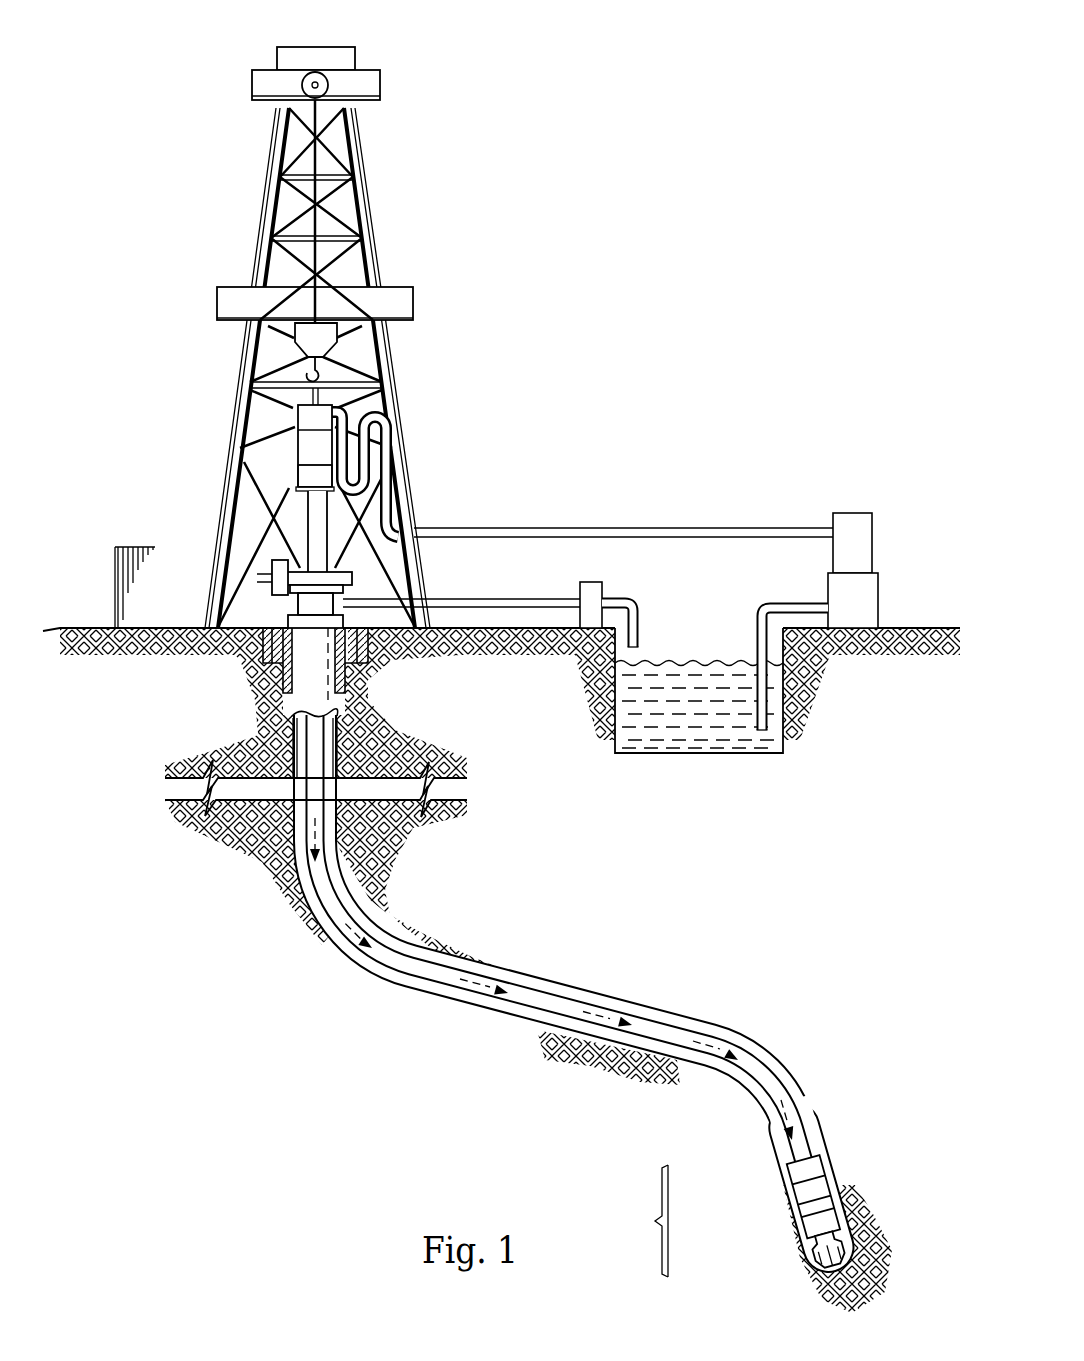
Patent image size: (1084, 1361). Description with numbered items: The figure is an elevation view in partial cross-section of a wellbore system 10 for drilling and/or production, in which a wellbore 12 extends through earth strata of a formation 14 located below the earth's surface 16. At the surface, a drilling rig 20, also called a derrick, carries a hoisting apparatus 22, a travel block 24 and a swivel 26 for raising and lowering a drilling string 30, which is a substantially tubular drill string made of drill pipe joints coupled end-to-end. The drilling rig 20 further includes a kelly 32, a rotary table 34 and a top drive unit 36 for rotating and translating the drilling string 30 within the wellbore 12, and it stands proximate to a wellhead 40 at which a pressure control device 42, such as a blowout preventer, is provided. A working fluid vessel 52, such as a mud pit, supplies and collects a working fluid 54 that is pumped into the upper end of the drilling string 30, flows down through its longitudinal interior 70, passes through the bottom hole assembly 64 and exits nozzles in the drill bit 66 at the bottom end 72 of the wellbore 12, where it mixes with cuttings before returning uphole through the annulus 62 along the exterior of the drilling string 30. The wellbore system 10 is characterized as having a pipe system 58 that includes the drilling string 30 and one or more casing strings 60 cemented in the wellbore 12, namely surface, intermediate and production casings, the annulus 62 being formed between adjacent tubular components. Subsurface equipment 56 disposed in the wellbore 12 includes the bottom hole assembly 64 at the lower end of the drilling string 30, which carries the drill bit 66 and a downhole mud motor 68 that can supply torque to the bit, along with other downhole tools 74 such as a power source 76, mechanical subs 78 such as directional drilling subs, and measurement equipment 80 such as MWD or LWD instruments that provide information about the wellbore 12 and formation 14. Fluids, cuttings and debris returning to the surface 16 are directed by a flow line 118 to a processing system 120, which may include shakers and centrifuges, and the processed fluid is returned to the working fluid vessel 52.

The wellbore system 10 is at (134, 79).
The wellbore 12 is at (315, 948).
The formation 14 is at (564, 823).
The earth's surface 16 is at (912, 628).
The drilling rig 20 is at (381, 90).
The hoisting apparatus 22 is at (303, 82).
The travel block 24 is at (305, 348).
The swivel 26 is at (308, 420).
The drilling string 30 is at (310, 752).
The kelly 32 is at (307, 512).
The rotary table 34 is at (296, 575).
The top drive unit 36 is at (308, 473).
The wellhead 40 is at (254, 620).
The pressure control device 42 is at (297, 602).
The working fluid vessel 52 is at (720, 752).
The working fluid 54 is at (690, 673).
The subsurface equipment 56 is at (852, 1116).
The pipe system 58 is at (340, 768).
The casing strings 60 is at (368, 678).
The annulus 62 is at (548, 986).
The bottom hole assembly 64 is at (769, 1210).
The drill bit 66 is at (858, 1250).
The downhole mud motor 68 is at (815, 1170).
The longitudinal interior 70 is at (426, 945).
The bottom end 72 is at (825, 1285).
The downhole tools 74 is at (806, 1210).
The power source 76 is at (790, 1184).
The mechanical subs 78 is at (835, 1207).
The measurement equipment 80 is at (798, 1231).
The flow line 118 is at (648, 528).
The processing system 120 is at (602, 586).